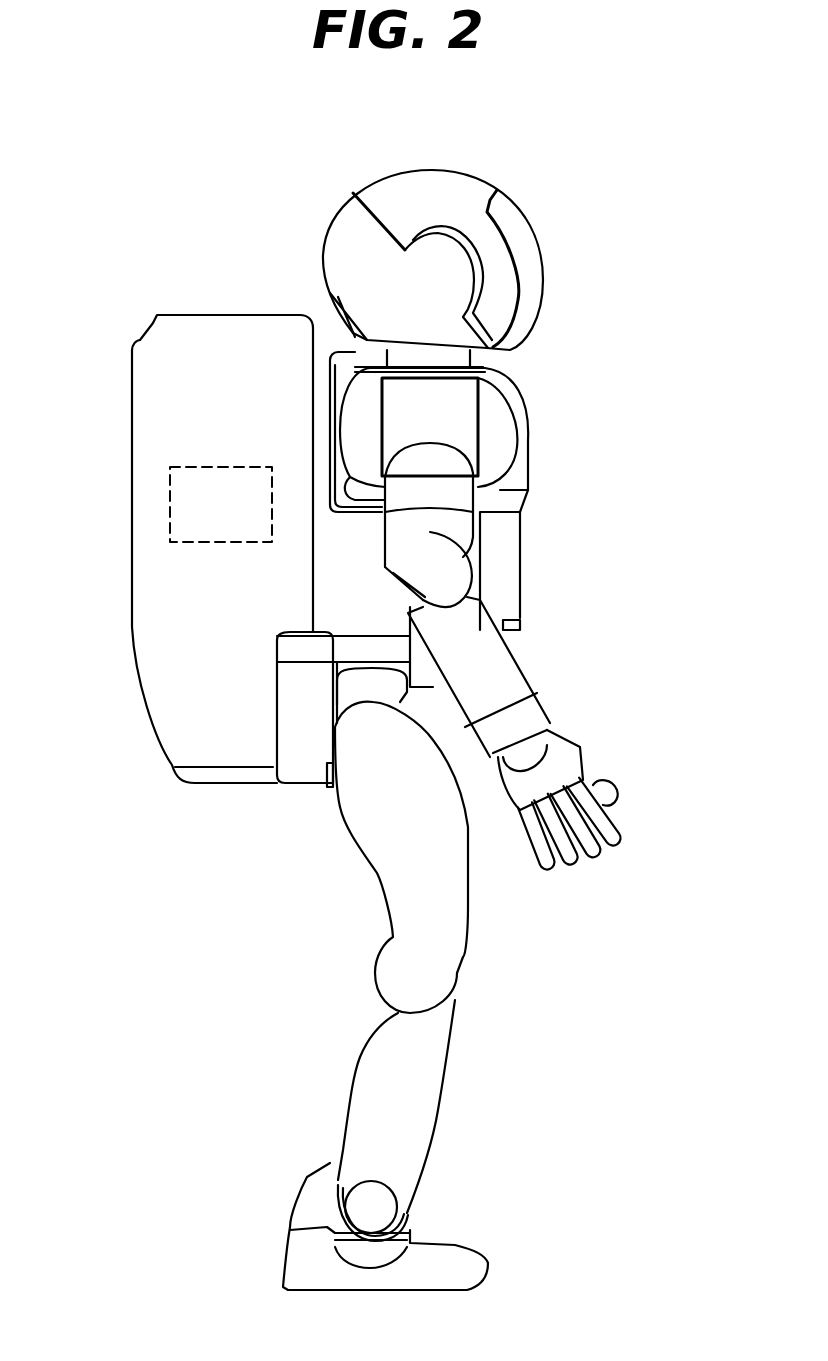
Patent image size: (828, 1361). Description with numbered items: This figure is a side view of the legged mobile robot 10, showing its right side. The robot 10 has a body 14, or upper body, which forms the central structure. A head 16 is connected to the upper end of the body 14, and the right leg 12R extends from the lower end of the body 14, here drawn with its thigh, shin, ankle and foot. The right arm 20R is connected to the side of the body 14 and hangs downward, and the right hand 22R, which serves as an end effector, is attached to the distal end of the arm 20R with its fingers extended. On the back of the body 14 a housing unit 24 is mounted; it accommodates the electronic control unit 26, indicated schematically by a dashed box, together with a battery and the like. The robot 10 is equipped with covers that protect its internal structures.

The legged mobile robot 10 is at (538, 398).
The right leg 12R is at (480, 988).
The body 14 is at (510, 557).
The head 16 is at (398, 168).
The right arm 20R is at (548, 668).
The right hand 22R is at (568, 762).
The housing unit 24 is at (210, 314).
The electronic control unit 26 is at (168, 512).